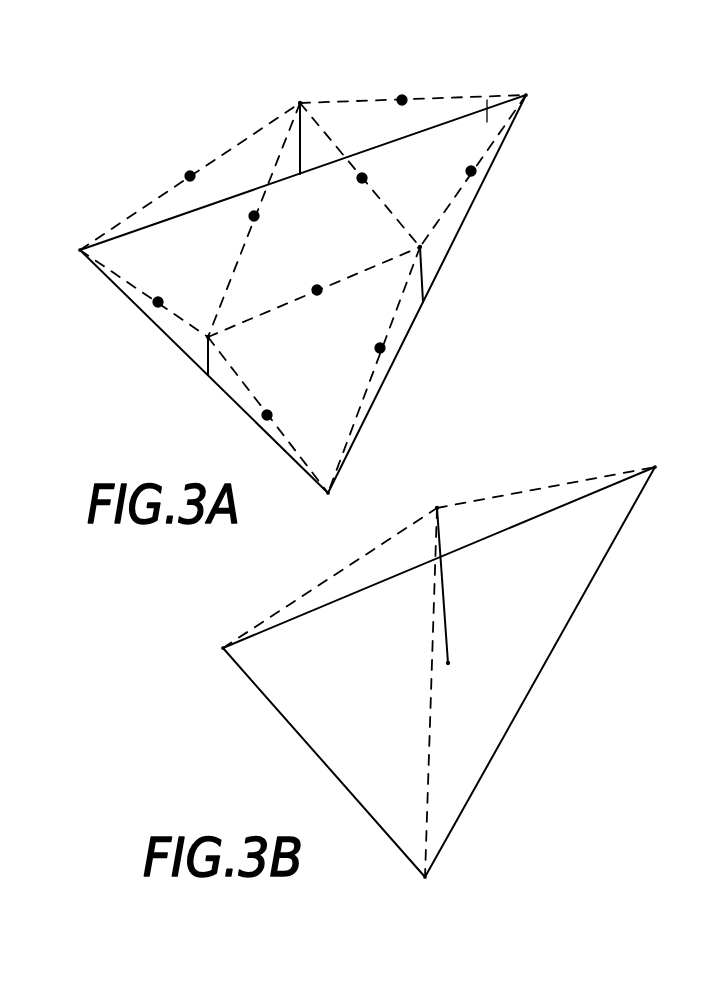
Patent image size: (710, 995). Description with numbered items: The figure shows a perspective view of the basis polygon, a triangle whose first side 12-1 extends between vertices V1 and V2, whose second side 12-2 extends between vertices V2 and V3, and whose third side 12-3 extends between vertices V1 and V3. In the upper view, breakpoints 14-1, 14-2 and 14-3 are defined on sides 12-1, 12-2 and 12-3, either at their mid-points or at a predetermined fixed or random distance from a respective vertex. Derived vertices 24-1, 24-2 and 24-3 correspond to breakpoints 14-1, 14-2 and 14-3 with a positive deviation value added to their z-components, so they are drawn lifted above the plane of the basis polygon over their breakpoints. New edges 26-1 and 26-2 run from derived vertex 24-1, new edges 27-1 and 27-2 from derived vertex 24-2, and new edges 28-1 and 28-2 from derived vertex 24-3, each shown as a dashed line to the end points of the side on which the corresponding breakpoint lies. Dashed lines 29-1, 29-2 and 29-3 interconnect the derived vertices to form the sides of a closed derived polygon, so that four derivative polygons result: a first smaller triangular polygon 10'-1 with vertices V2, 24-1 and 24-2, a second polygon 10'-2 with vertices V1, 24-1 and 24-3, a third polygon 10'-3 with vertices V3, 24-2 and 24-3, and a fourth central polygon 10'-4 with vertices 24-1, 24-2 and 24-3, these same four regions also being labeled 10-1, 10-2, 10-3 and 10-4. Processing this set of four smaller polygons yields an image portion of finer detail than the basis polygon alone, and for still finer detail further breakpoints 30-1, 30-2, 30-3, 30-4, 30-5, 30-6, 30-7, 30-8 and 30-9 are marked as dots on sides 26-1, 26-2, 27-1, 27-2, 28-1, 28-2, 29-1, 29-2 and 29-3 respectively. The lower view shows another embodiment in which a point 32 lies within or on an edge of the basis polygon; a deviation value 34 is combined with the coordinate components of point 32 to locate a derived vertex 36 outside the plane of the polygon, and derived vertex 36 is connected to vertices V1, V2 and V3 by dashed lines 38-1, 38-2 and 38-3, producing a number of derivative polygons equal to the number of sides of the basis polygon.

In FIG. 3A, the first side 12-1 is at (424, 131).
In FIG. 3B, the first side 12-1 is at (352, 594).
In FIG. 3A, the second side 12-2 is at (475, 200).
In FIG. 3B, the second side 12-2 is at (556, 643).
In FIG. 3A, the third side 12-3 is at (248, 416).
In FIG. 3B, the third side 12-3 is at (336, 776).
In FIG. 3A, the breakpoint 14-1 is at (300, 172).
In FIG. 3A, the breakpoint 14-2 is at (423, 286).
In FIG. 3A, the breakpoint 14-3 is at (207, 370).
In FIG. 3A, the derived vertex 24-1 is at (300, 103).
In FIG. 3A, the derived vertex 24-2 is at (420, 247).
In FIG. 3A, the derived vertex 24-3 is at (208, 338).
In FIG. 3A, the new edge 26-1 is at (166, 193).
In FIG. 3A, the new edge 26-2 is at (460, 98).
In FIG. 3A, the new edge 27-1 is at (498, 136).
In FIG. 3A, the new edge 27-2 is at (408, 284).
In FIG. 3A, the new edge 28-1 is at (257, 396).
In FIG. 3A, the new edge 28-2 is at (128, 284).
In FIG. 3A, the dashed line 29-1 is at (395, 218).
In FIG. 3A, the dashed line 29-2 is at (362, 270).
In FIG. 3A, the dashed line 29-3 is at (242, 252).
In FIG. 3A, the breakpoint 30-1 is at (190, 174).
In FIG. 3A, the breakpoint 30-2 is at (402, 98).
In FIG. 3A, the breakpoint 30-3 is at (476, 171).
In FIG. 3A, the breakpoint 30-4 is at (384, 348).
In FIG. 3A, the breakpoint 30-5 is at (270, 415).
In FIG. 3A, the breakpoint 30-6 is at (160, 302).
In FIG. 3A, the breakpoint 30-7 is at (362, 178).
In FIG. 3A, the breakpoint 30-8 is at (317, 292).
In FIG. 3A, the breakpoint 30-9 is at (252, 216).
In FIG. 3A, the first smaller triangular polygon 10'-1 is at (507, 169).
In FIG. 3A, the second polygon 10'-2 is at (157, 255).
In FIG. 3A, the third polygon 10'-3 is at (391, 370).
In FIG. 3A, the fourth central polygon 10'-4 is at (141, 312).
In FIG. 3A, the sub-facet of subdivided surface 10-1 is at (473, 198).
In FIG. 3A, the sub-facet of subdivided surface 10-2 is at (190, 255).
In FIG. 3A, the sub-facet of subdivided surface 10-3 is at (375, 370).
In FIG. 3A, the sub-facet of subdivided surface 10-4 is at (144, 312).
In FIG. 3B, the point 32 is at (449, 663).
In FIG. 3B, the deviation value 34 is at (444, 590).
In FIG. 3B, the derived vertex 36 is at (437, 508).
In FIG. 3B, the dashed line 38-1 is at (318, 586).
In FIG. 3B, the dashed line 38-2 is at (544, 488).
In FIG. 3B, the dashed line 38-3 is at (431, 710).
In FIG. 3A, the vertex V1 is at (80, 250).
In FIG. 3B, the vertex V1 is at (223, 648).
In FIG. 3A, the vertex V2 is at (526, 95).
In FIG. 3B, the vertex V2 is at (655, 467).
In FIG. 3A, the vertex V3 is at (328, 493).
In FIG. 3B, the vertex V3 is at (426, 876).